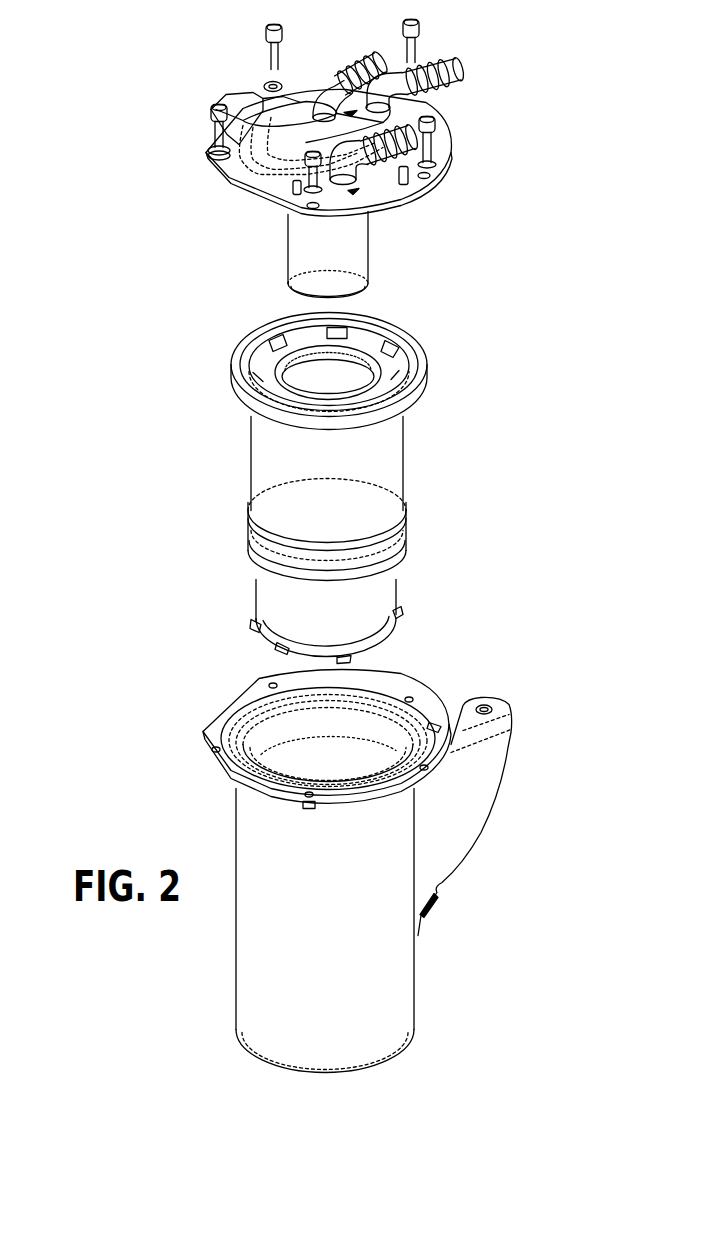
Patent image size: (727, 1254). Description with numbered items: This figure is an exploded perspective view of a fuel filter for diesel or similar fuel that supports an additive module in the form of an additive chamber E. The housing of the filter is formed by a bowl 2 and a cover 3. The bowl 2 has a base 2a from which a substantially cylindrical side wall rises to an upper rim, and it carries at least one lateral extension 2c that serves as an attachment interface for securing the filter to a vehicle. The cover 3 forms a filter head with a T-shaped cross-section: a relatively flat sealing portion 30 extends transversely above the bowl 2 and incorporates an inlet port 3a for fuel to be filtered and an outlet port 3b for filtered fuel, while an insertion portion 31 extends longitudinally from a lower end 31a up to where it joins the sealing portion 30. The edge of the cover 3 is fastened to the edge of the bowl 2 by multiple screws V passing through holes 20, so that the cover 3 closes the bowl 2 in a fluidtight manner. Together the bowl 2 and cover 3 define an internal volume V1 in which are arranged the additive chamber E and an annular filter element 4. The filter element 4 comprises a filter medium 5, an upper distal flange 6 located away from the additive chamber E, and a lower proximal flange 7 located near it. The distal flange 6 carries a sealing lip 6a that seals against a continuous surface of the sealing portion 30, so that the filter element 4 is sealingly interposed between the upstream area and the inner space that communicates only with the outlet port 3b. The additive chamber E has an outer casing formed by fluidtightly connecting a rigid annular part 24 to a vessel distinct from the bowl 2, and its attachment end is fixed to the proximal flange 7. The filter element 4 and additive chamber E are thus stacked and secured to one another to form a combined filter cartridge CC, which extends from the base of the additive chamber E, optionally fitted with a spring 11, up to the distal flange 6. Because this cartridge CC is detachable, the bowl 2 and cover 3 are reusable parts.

The bowl 2 is at (343, 881).
The base 2a is at (397, 1052).
The lateral extension 2c is at (483, 780).
The cover 3 is at (307, 380).
The inlet port 3a is at (355, 155).
The outlet port 3b is at (428, 53).
The filter element 4 is at (327, 494).
The filter medium 5 is at (265, 483).
The distal flange 6 is at (232, 371).
The sealing lip 6a is at (374, 356).
The proximal flange 7 is at (405, 516).
The spring 11 is at (395, 628).
The holes 20 is at (207, 156).
The annular part 24 is at (248, 537).
The sealing portion 30 is at (449, 140).
The insertion portion 31 is at (369, 270).
The lower end 31a is at (290, 284).
The screws V is at (265, 31).
The internal volume V1 is at (265, 755).
The combined filter cartridge CC is at (241, 583).
The additive chamber E is at (412, 578).